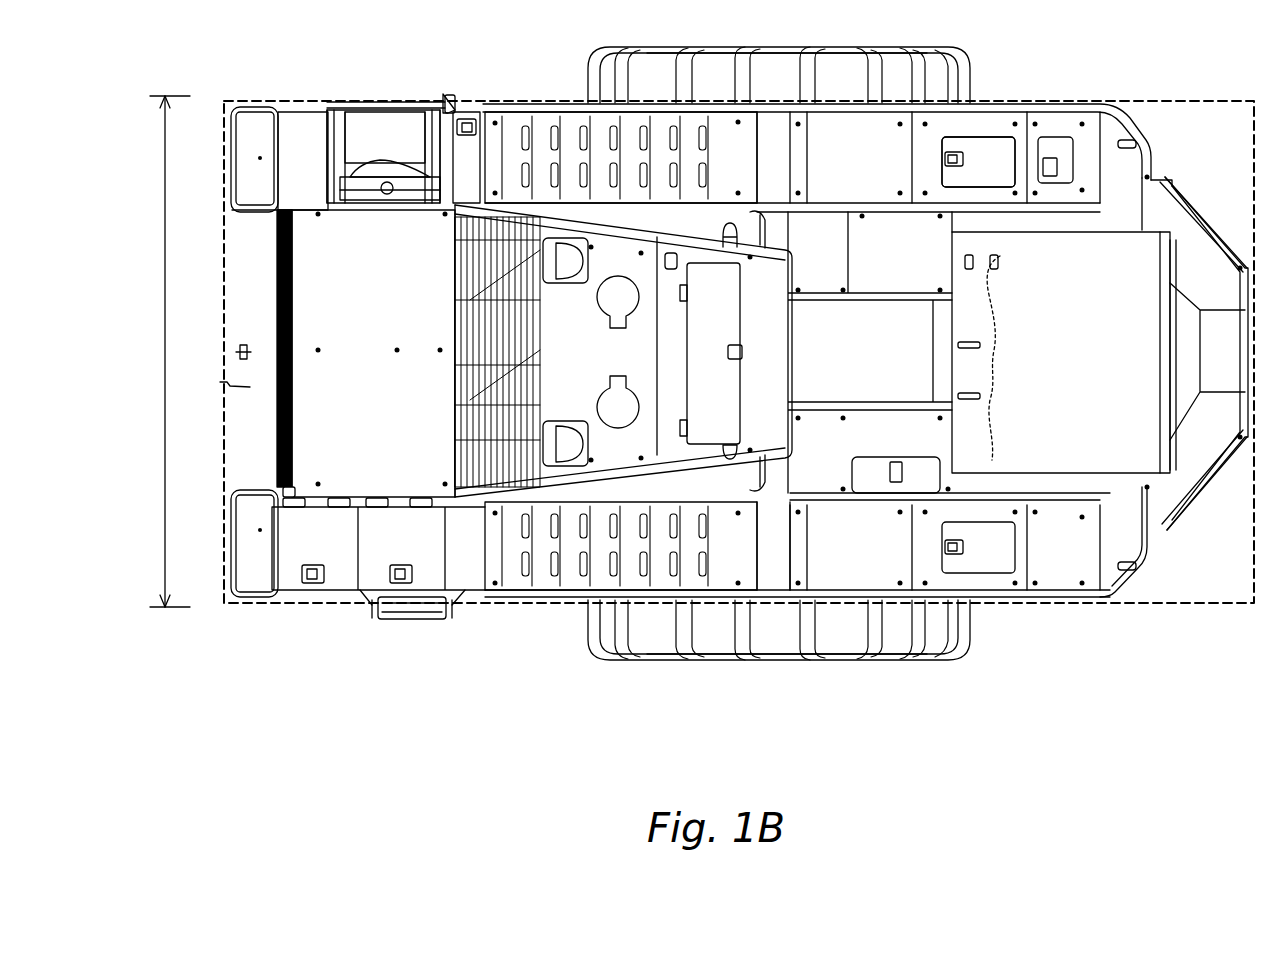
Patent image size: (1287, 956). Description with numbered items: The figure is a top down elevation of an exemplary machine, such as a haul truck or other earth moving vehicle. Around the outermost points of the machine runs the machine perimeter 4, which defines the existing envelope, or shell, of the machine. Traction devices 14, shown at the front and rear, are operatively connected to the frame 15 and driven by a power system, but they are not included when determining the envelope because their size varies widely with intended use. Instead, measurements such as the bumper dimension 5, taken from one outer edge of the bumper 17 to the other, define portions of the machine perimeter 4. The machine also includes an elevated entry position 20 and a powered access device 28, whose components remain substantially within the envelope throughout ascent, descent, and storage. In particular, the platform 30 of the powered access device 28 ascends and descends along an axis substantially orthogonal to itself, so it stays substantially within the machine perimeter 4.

The machine perimeter 4 is at (1173, 102).
The bumper dimension 5 is at (153, 290).
The traction device 14 is at (877, 651).
The frame 15 is at (1117, 597).
The bumper 17 is at (278, 172).
The elevated entry position 20 is at (447, 177).
The powered access device 28 is at (355, 147).
The platform 30 is at (413, 108).